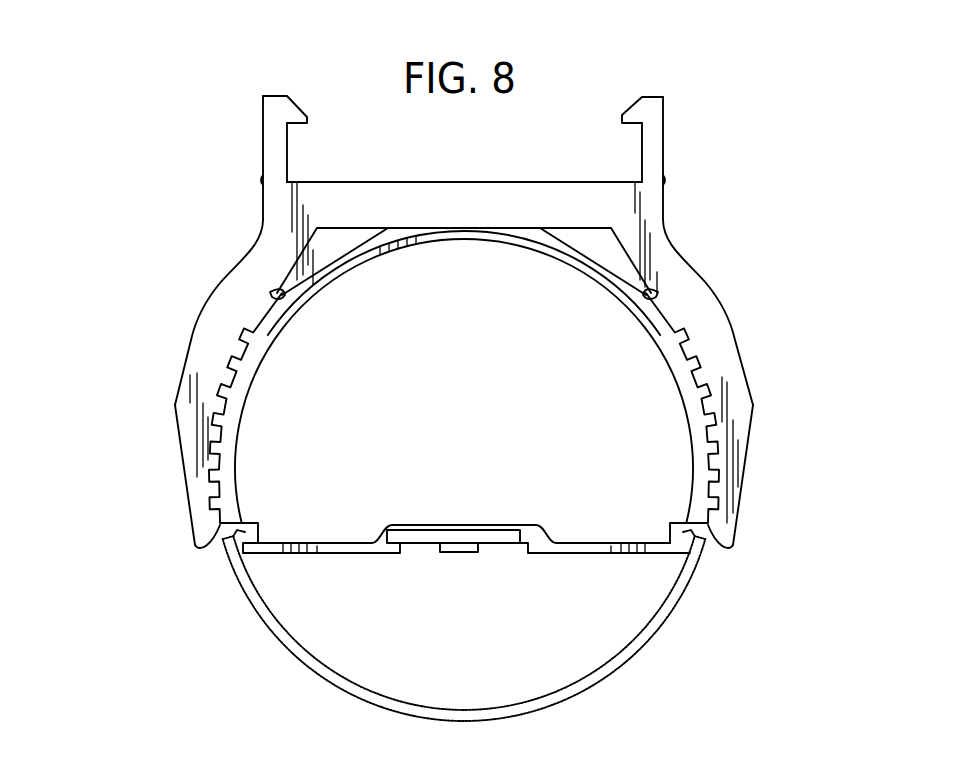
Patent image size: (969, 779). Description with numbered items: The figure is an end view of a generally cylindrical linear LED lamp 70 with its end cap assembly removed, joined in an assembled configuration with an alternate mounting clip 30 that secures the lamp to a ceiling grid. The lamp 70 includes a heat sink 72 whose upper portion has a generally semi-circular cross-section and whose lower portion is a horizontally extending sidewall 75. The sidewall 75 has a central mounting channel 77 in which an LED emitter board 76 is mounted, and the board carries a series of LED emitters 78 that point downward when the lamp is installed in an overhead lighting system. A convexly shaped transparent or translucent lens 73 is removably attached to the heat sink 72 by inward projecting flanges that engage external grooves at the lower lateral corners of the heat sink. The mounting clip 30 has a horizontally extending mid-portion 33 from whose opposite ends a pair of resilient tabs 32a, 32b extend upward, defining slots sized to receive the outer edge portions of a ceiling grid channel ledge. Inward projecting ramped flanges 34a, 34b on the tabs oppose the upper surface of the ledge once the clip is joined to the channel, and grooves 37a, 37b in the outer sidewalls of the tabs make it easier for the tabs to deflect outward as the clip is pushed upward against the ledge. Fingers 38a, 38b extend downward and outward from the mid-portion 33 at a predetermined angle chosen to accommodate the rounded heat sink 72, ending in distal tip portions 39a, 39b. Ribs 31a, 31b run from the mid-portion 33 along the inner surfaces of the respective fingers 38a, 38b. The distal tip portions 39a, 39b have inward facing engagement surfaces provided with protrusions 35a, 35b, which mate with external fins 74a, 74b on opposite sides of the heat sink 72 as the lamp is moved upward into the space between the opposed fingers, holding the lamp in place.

The mounting clip 30 is at (724, 202).
The rib 31a is at (272, 292).
The rib 31b is at (656, 292).
The resilient tab 32a is at (263, 113).
The resilient tab 32b is at (667, 105).
The mid-portion 33 is at (450, 195).
The ramped flange 34a is at (303, 98).
The ramped flange 34b is at (628, 105).
The protrusion 35a is at (200, 548).
The protrusion 35b is at (733, 543).
The groove 37a is at (266, 180).
The groove 37b is at (665, 182).
The finger 38a is at (200, 327).
The finger 38b is at (735, 320).
The distal tip portion 39a is at (187, 478).
The distal tip portion 39b is at (757, 465).
The cylindrical linear LED lamp 70 is at (746, 591).
The heat sink 72 is at (457, 238).
The lens 73 is at (585, 688).
The external fin 74a is at (215, 443).
The external fin 74b is at (715, 420).
The sidewall 75 is at (366, 555).
The LED emitter board 76 is at (425, 547).
The central mounting channel 77 is at (503, 545).
The LED emitter 78 is at (458, 555).